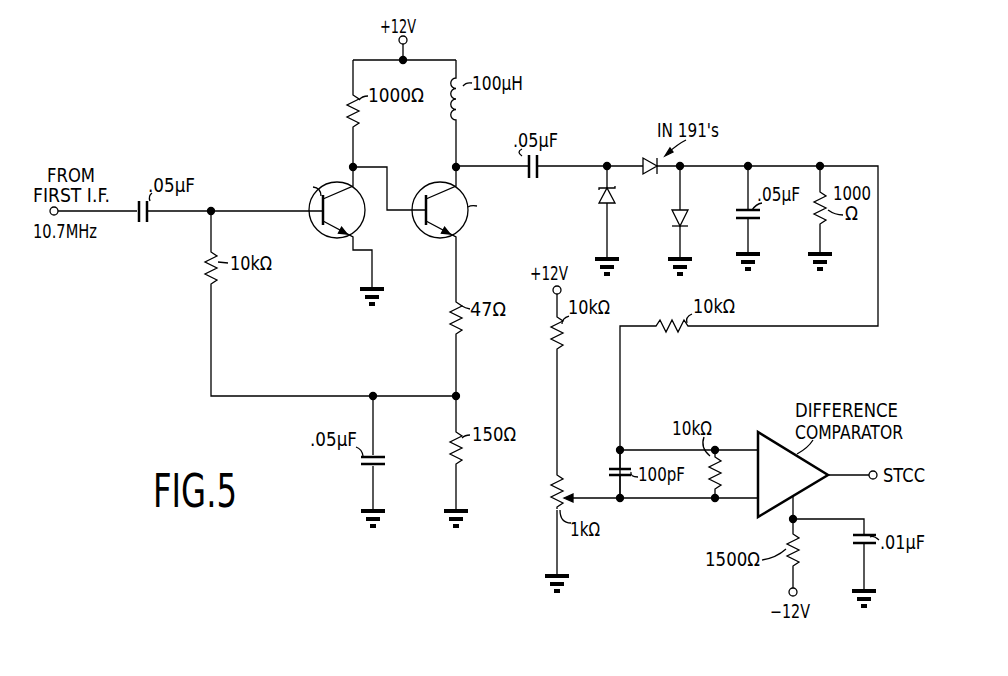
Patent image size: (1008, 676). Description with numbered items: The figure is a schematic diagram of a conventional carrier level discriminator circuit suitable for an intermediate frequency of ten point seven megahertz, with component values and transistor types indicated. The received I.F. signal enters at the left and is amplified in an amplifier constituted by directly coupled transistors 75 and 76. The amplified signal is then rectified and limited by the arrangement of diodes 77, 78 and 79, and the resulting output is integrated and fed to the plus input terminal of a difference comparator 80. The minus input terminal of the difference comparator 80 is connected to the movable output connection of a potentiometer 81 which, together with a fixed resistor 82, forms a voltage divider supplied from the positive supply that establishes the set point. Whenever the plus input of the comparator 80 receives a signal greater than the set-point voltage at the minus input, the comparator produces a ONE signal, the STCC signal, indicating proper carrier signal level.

The transistor 75 is at (334, 238).
The transistor 76 is at (437, 238).
The diode 77 is at (616, 197).
The diode 78 is at (644, 159).
The diode 79 is at (684, 212).
The difference comparator 80 is at (789, 483).
The potentiometer 81 is at (552, 499).
The fixed resistor 82 is at (551, 334).